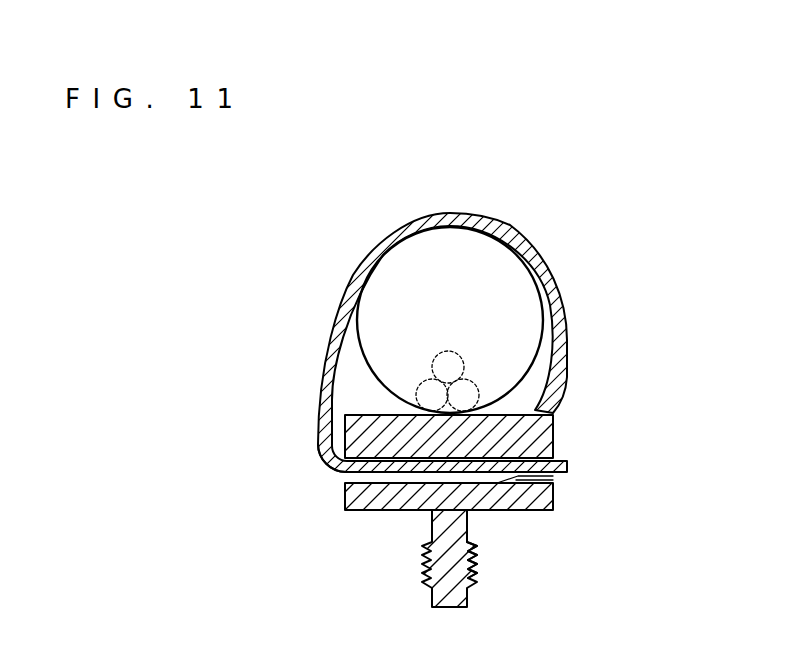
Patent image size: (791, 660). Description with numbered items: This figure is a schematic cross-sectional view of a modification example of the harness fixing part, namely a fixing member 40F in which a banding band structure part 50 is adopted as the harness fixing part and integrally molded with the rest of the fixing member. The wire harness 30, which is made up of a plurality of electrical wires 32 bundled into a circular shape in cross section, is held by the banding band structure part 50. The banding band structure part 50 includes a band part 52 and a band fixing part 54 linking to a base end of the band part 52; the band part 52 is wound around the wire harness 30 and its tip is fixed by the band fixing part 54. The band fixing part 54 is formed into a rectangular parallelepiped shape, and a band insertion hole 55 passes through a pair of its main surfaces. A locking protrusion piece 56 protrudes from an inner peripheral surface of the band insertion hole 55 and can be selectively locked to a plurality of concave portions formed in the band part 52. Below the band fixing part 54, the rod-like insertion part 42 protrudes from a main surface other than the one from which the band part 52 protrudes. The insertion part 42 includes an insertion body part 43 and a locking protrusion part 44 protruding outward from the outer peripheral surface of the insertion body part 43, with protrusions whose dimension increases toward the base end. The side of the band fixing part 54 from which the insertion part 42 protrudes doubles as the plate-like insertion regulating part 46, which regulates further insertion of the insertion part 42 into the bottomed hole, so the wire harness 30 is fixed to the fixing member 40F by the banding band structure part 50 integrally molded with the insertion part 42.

The wire harness 30 is at (358, 354).
The electrical wires 32 is at (433, 362).
The banding band structure part 50 is at (425, 350).
The band part 52 is at (565, 377).
The band fixing part 54 is at (543, 438).
The band insertion hole 55 is at (347, 477).
The locking protrusion piece 56 is at (540, 478).
The fixing member 40F is at (486, 545).
The insertion regulating part 46 is at (377, 511).
The insertion part 42 is at (454, 558).
The insertion body part 43 is at (476, 545).
The locking protrusion part 44 is at (478, 571).